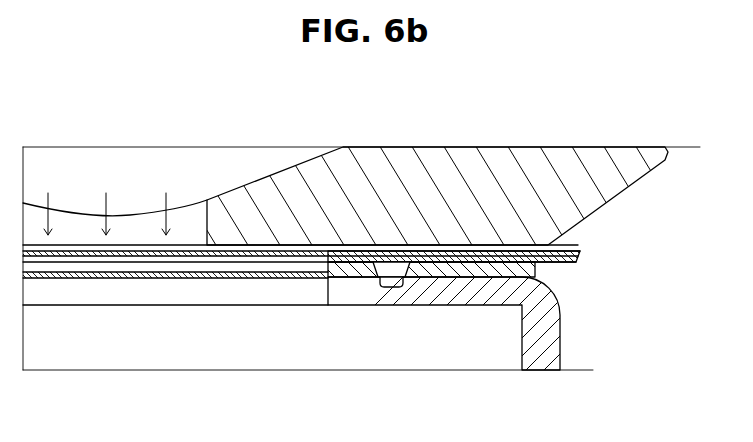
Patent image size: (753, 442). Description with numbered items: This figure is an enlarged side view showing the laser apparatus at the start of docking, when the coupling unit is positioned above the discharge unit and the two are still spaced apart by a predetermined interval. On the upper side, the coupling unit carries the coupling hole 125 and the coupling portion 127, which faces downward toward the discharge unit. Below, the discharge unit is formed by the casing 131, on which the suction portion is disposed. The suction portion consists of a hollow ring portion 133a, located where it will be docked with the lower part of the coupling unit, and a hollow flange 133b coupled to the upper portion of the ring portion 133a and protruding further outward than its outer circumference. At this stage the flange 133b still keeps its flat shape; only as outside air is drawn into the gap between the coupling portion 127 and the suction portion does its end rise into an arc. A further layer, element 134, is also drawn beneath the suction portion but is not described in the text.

The coupling hole 125 is at (133, 233).
The coupling portion 127 is at (470, 182).
The casing 131 is at (550, 333).
The ring portion 133a is at (522, 270).
The flange 133b is at (580, 250).
The flexible circuit board 134 is at (218, 266).